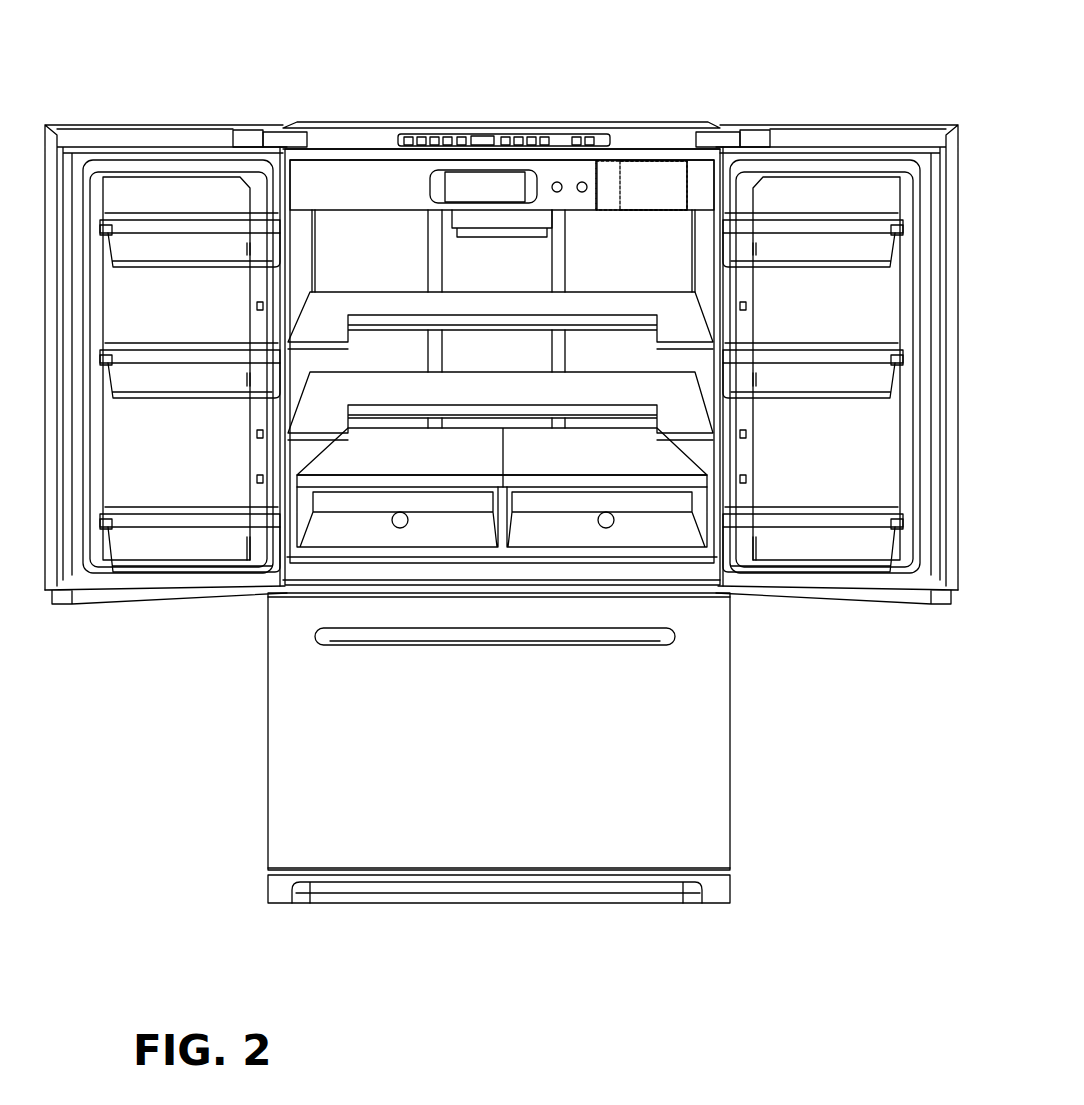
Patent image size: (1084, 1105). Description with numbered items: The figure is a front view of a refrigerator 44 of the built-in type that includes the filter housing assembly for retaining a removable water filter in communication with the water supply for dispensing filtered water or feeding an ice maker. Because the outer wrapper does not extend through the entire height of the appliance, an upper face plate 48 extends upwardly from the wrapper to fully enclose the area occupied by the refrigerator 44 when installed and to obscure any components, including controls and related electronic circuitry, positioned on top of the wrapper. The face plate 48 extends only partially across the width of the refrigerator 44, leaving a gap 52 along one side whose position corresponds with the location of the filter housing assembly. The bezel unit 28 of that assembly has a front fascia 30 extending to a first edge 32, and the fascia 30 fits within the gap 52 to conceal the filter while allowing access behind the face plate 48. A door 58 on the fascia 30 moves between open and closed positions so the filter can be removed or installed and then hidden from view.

The bezel unit 28 is at (690, 161).
The front fascia 30 is at (610, 173).
The first edge 32 is at (593, 172).
The refrigerator 44 is at (731, 100).
The upper face plate 48 is at (377, 178).
The gap 52 is at (588, 199).
The door 58 is at (653, 180).